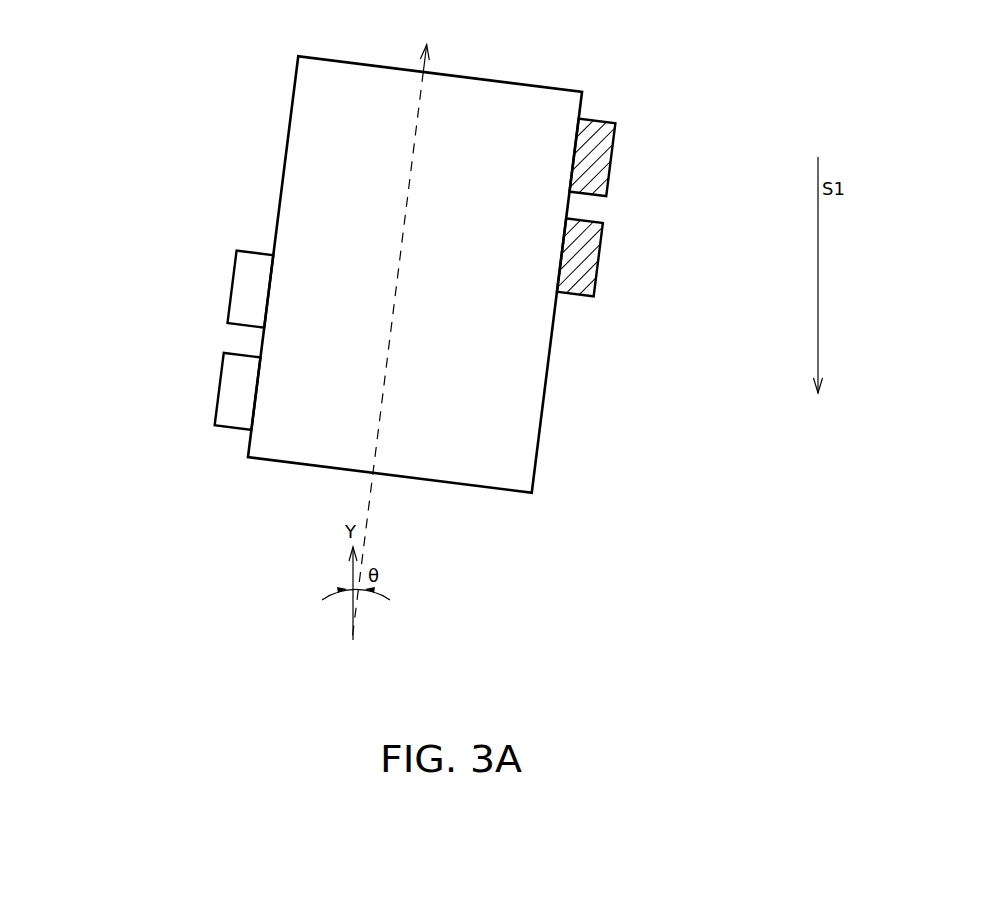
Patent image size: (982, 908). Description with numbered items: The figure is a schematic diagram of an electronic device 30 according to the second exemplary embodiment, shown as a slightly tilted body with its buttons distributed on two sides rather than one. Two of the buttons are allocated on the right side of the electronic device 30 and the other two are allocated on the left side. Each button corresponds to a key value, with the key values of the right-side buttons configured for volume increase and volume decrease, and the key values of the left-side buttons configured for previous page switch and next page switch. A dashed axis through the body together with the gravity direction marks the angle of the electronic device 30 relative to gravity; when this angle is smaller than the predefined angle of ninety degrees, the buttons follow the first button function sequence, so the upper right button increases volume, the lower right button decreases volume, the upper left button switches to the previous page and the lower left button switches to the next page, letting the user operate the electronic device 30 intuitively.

The electronic device 30 is at (512, 80).